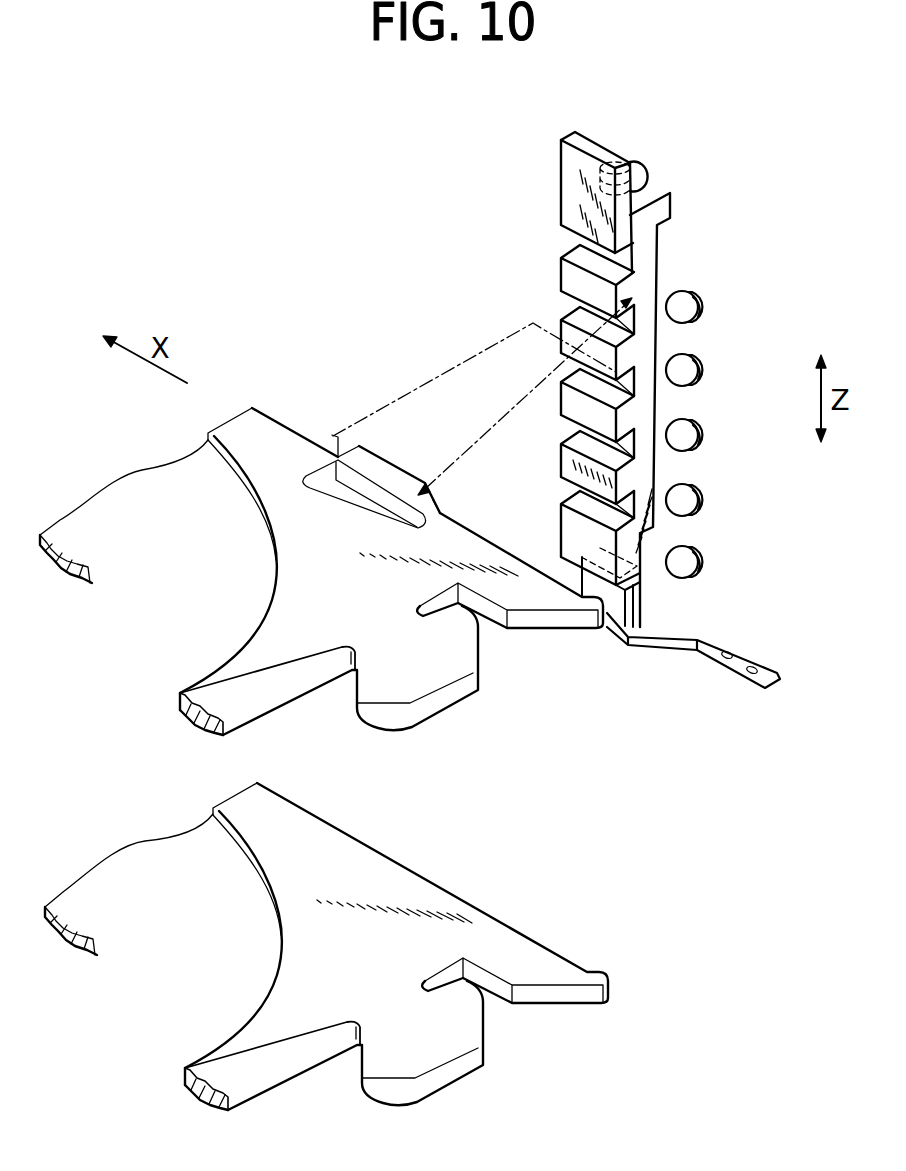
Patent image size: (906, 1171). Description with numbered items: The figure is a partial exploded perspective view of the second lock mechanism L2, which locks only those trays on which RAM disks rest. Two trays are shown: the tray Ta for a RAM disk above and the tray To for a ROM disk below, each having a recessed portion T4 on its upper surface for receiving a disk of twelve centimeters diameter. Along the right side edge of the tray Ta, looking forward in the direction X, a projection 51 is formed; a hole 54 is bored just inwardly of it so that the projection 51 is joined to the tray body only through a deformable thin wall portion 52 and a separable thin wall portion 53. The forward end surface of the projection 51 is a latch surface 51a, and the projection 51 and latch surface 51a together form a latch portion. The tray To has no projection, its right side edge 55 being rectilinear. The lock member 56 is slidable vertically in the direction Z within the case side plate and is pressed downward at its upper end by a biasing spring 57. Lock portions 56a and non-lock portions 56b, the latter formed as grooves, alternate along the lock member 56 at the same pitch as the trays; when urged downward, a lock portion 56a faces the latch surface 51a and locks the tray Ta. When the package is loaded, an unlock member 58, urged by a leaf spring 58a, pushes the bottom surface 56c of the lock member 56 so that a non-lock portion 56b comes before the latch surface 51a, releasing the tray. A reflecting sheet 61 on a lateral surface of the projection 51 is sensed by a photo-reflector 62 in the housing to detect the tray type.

The projection 51 is at (378, 470).
The latch surface 51a is at (338, 434).
The deformable thin wall portion 52 is at (430, 508).
The separable thin wall portion 53 is at (293, 440).
The hole 54 is at (338, 500).
The side edge 55 is at (399, 861).
The lock member 56 is at (645, 250).
The lock portion 56a is at (625, 303).
The non-lock portion 56b is at (580, 260).
The bottom surface 56c is at (643, 580).
The biasing spring 57 is at (642, 161).
The unlock member 58 is at (620, 614).
The leaf spring 58a is at (725, 670).
The reflecting sheet 61 is at (422, 474).
The photo-reflector 62 is at (702, 355).
The second lock mechanism L2 is at (509, 233).
The recessed portion T4 is at (236, 472).
The tray for a RAM disk Ta is at (291, 420).
The tray for a ROM disk To is at (502, 908).